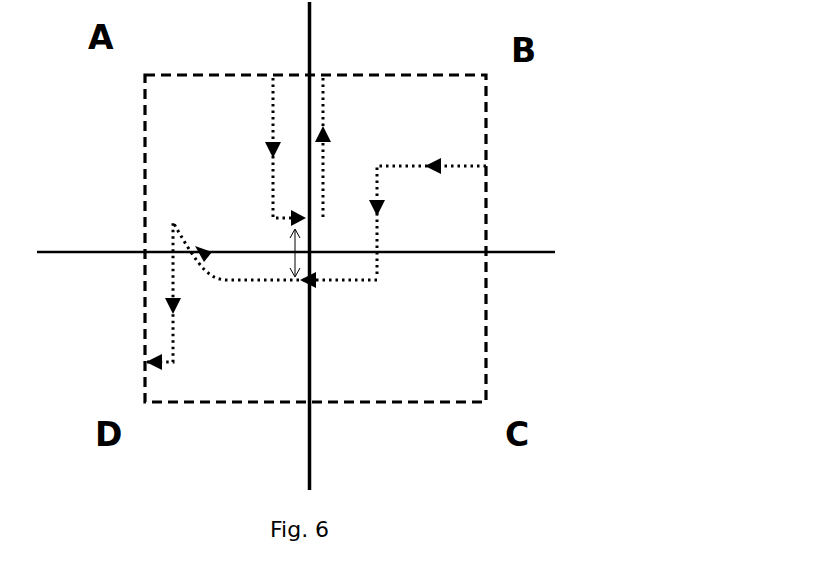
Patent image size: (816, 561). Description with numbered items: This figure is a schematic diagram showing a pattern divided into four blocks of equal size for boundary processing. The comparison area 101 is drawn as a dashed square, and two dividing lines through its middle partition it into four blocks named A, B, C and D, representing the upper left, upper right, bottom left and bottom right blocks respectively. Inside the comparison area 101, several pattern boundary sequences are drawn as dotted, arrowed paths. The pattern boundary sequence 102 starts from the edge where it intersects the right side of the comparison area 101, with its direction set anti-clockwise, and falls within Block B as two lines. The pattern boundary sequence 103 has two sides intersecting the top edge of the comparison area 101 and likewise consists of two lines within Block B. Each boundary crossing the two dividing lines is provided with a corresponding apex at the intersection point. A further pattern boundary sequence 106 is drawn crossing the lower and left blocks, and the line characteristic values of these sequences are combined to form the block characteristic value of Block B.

The comparison area 101 is at (510, 117).
The pattern boundary sequence 102 is at (492, 170).
The pattern boundary sequence 103 is at (353, 102).
The third movement path 106 is at (338, 253).